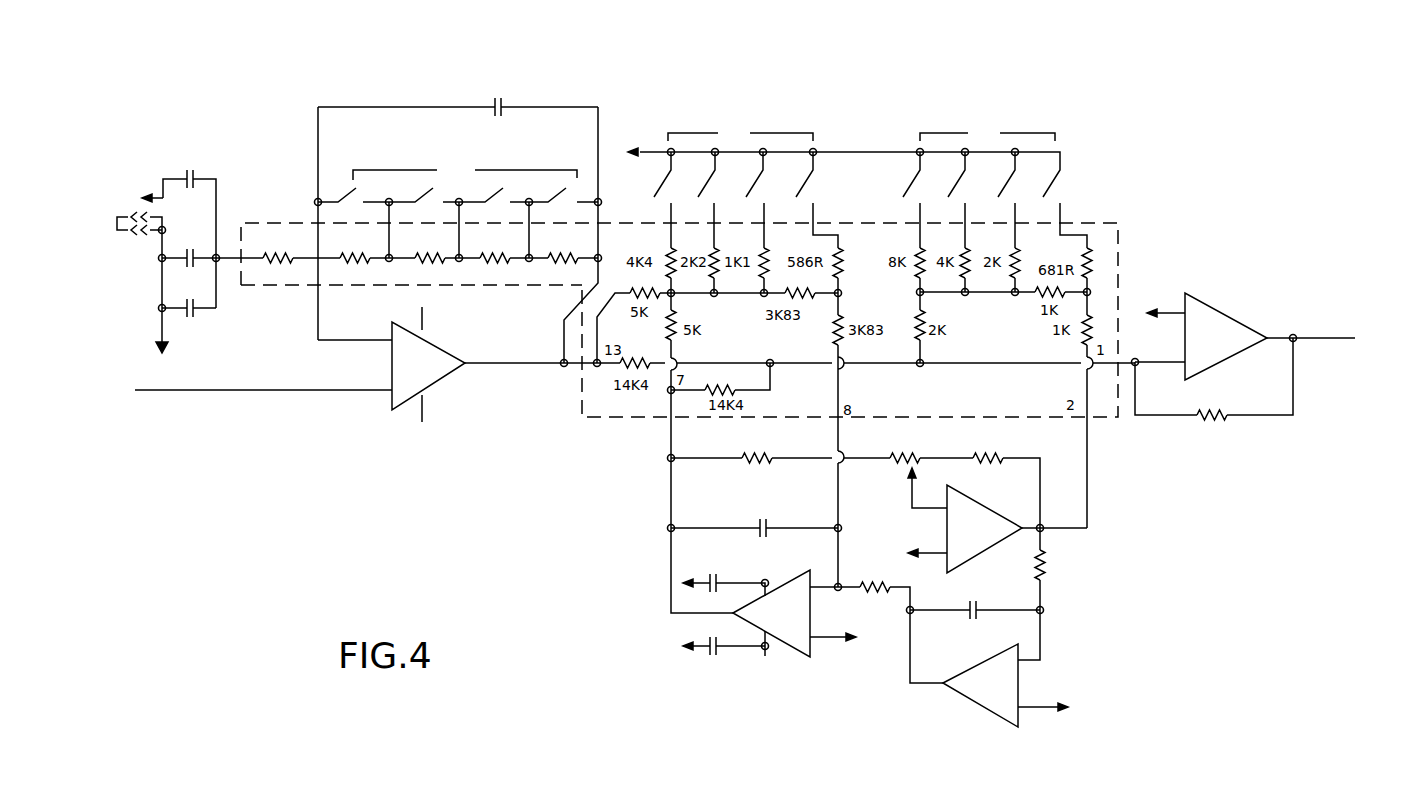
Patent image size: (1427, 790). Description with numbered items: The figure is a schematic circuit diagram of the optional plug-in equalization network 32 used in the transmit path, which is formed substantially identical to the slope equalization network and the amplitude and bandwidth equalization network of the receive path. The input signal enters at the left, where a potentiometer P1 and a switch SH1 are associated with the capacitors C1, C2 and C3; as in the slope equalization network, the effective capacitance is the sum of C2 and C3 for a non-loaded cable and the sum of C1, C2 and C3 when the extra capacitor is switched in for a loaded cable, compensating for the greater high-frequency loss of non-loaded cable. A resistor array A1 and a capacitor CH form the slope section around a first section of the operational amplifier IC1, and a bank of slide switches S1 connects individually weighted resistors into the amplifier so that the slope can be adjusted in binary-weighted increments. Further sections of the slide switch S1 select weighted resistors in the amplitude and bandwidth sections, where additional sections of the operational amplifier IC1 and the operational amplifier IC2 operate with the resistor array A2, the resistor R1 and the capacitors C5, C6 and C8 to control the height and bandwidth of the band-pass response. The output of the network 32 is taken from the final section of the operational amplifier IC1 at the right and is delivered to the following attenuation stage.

The optional plug-in equalization network 32 is at (550, 468).
The capacitor C1 is at (200, 223).
The capacitor C2 is at (189, 281).
The capacitor C3 is at (200, 326).
The capacitor C5 is at (755, 551).
The capacitor C6 is at (988, 658).
The capacitor C8 is at (733, 659).
The capacitor CH is at (458, 101).
The potentiometer P1 is at (148, 182).
The switch SH1 is at (108, 223).
The resistor array A1 is at (407, 242).
The resistor array A2 is at (997, 536).
The resistor R1 is at (854, 481).
The slide switch S1 is at (699, 224).
The operational amplifier IC1 is at (748, 494).
The operational amplifier IC2 is at (832, 619).